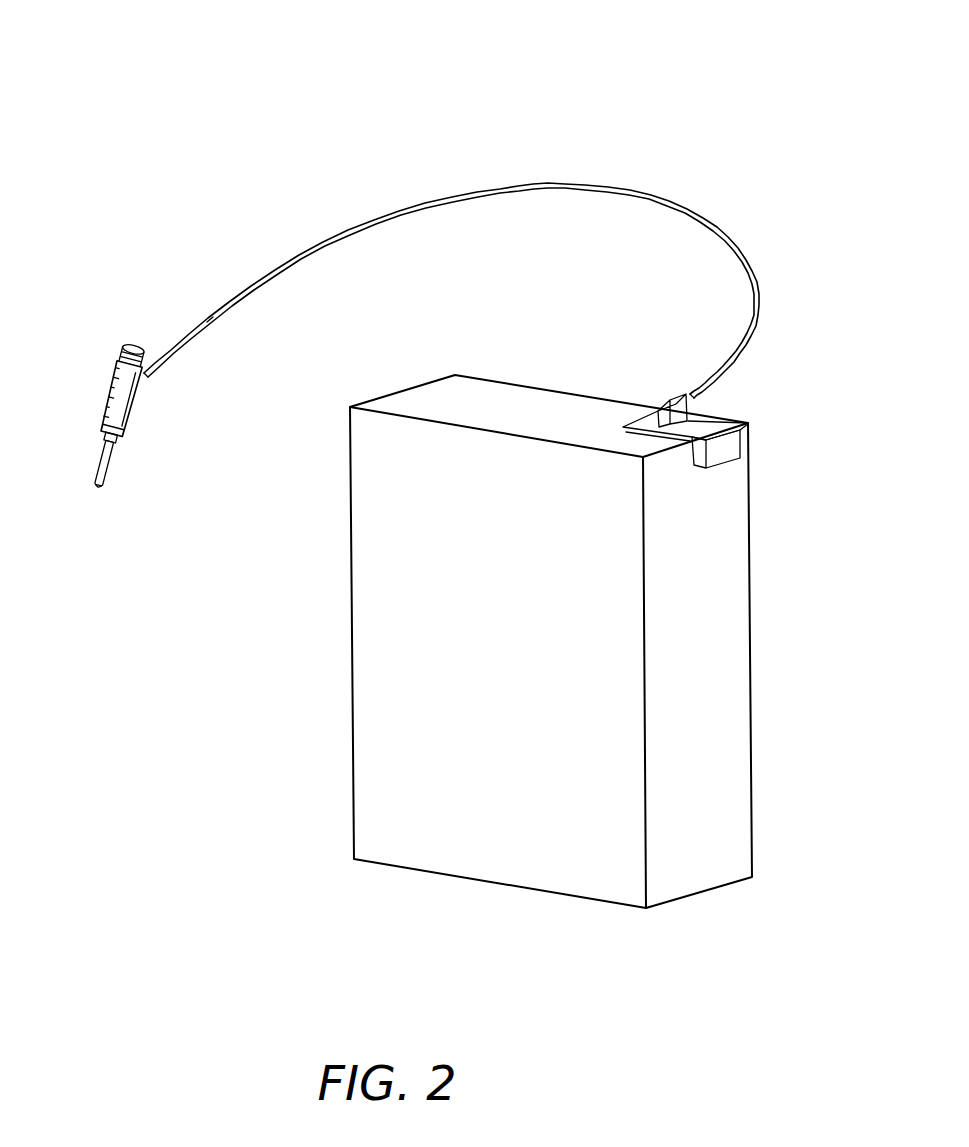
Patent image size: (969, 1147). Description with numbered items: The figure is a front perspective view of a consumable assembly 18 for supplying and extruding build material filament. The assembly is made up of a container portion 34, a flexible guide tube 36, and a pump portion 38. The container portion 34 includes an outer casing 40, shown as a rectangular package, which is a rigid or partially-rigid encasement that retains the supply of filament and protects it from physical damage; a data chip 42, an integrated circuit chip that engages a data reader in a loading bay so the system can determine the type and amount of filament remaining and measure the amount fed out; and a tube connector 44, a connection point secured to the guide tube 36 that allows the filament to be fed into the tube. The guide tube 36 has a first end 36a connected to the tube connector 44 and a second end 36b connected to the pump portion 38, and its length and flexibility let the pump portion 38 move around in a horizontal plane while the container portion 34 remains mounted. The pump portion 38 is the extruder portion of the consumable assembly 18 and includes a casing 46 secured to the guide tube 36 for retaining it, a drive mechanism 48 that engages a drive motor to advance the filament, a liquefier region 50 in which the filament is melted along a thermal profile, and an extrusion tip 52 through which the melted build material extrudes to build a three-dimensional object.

The consumable assembly 18 is at (765, 60).
The container portion 34 is at (486, 659).
The guide tube 36 is at (563, 186).
The first end 36a is at (708, 393).
The second end 36b is at (173, 371).
The pump portion 38 is at (144, 412).
The outer casing 40 is at (482, 848).
The data chip 42 is at (723, 445).
The tube connector 44 is at (663, 413).
The casing 46 is at (137, 400).
The drive mechanism 48 is at (125, 344).
The liquefier region 50 is at (98, 468).
The extrusion tip 52 is at (100, 488).